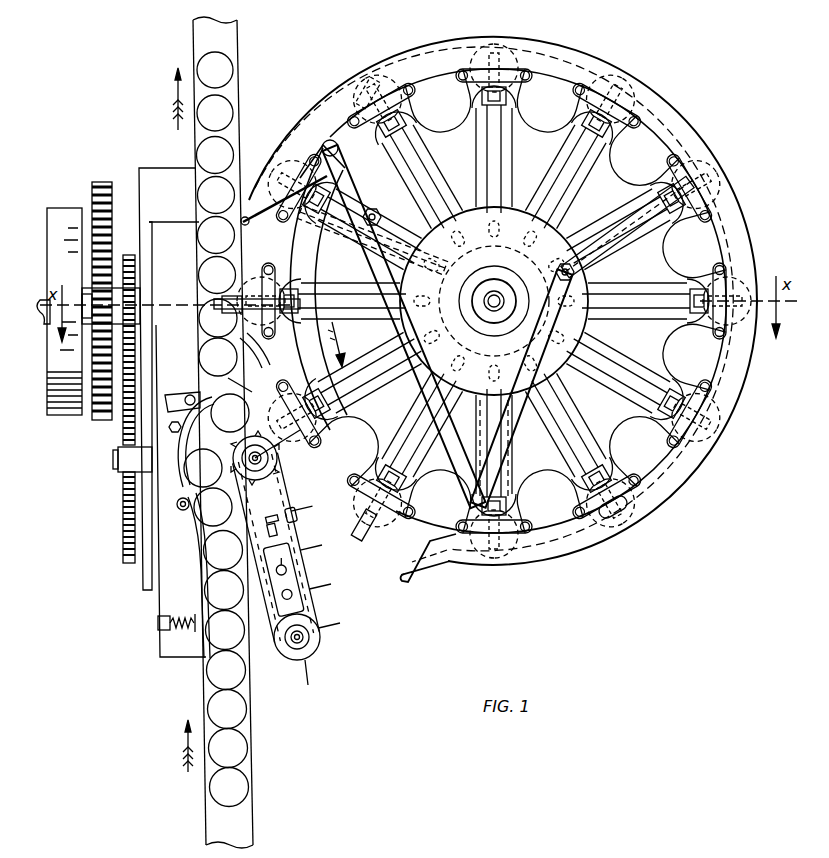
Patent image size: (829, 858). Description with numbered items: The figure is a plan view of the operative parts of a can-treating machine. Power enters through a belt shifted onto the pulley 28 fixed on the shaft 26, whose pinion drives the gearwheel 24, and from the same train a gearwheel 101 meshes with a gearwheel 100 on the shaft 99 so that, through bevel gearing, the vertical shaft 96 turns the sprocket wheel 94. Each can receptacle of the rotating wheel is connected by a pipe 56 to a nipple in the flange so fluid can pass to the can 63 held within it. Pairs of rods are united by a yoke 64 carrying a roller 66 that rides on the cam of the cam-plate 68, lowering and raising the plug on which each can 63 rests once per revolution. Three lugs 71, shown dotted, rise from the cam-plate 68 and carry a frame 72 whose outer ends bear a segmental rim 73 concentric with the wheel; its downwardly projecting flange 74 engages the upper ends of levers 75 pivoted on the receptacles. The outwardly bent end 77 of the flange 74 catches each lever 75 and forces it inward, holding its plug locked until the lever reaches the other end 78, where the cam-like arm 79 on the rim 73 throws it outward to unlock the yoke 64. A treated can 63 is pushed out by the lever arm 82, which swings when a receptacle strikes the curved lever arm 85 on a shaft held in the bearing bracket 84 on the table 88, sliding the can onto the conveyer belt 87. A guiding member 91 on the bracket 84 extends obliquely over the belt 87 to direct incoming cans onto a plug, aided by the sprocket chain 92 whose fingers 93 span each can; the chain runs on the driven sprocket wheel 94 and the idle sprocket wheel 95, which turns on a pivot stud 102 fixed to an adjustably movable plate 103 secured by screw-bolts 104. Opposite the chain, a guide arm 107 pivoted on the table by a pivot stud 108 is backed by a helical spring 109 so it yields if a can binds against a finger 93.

The gearwheel 24 is at (100, 182).
The shaft 26 is at (46, 300).
The pulley 28 is at (64, 311).
The pipe 56 is at (640, 394).
The can 63 is at (216, 412).
The yoke 64 is at (600, 520).
The roller 66 is at (592, 492).
The cam-plate 68 is at (518, 410).
The lug 71 is at (405, 214).
The frame 72 is at (650, 200).
The rim 73 is at (672, 466).
The flange 74 is at (566, 76).
The lever 75 is at (372, 100).
The outwardly turned end 77 is at (402, 582).
The end of flange 78 is at (300, 176).
The cam-like arm 79 is at (272, 208).
The lever arm 82 is at (256, 350).
The bearing bracket 84 is at (176, 412).
The curved lever arm 85 is at (232, 380).
The conveyer belt 87 is at (246, 805).
The table 88 is at (172, 412).
The guiding member 91 is at (182, 456).
The sprocket chain 92 is at (292, 512).
The finger 93 is at (336, 585).
The sprocket wheel 94 is at (258, 478).
The sprocket wheel 95 is at (316, 652).
The shaft 96 is at (240, 455).
The shaft 99 is at (118, 460).
The gearwheel 100 is at (124, 515).
The gearwheel 101 is at (129, 256).
The pivot stud 102 is at (293, 645).
The adjustably movable plate 103 is at (287, 596).
The screw-bolt 104 is at (290, 570).
The guide arm 107 is at (199, 540).
The pivot stud 108 is at (181, 508).
The helical spring 109 is at (178, 620).